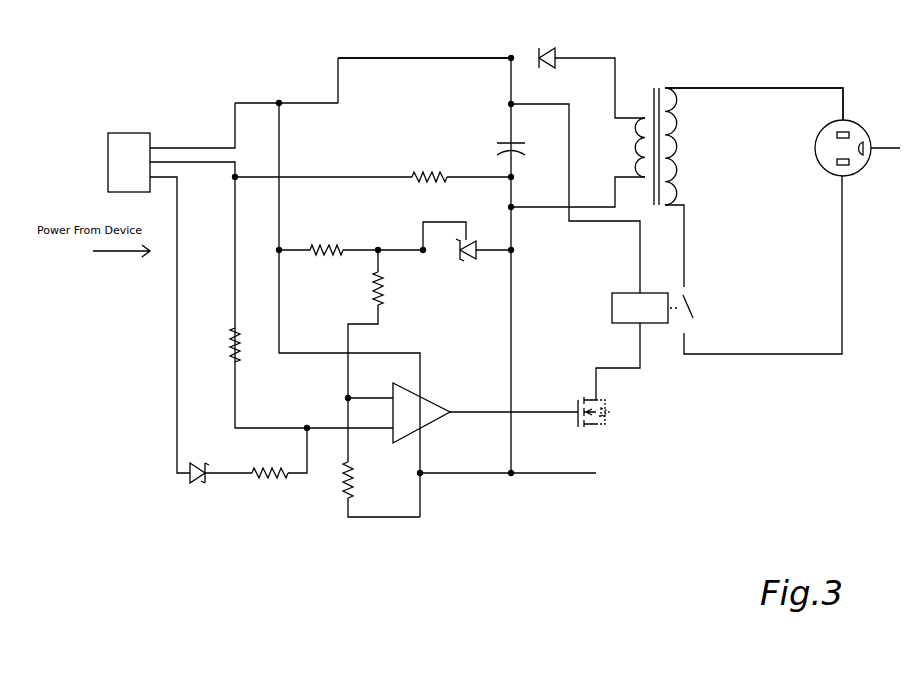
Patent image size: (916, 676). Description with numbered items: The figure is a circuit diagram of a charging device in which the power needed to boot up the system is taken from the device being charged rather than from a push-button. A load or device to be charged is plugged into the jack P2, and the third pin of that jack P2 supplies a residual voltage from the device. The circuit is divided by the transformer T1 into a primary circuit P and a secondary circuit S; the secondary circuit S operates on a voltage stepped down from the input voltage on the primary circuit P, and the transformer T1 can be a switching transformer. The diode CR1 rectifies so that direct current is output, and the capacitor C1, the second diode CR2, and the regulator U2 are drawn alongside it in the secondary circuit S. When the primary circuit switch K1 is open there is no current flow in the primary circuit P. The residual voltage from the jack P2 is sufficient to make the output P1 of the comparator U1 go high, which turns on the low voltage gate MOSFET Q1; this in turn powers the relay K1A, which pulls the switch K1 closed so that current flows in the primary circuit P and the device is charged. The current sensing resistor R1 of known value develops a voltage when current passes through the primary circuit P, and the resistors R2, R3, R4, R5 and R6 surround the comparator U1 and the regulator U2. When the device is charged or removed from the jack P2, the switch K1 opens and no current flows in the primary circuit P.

The secondary circuit S is at (367, 58).
The primary circuit P is at (745, 89).
The output pin of comparator P1 is at (851, 142).
The jack P2 is at (129, 155).
The current sensing resistor R1 is at (427, 176).
The resistor 1.5K R2 is at (324, 249).
The resistor 10.0K R3 is at (216, 343).
The resistor 1.8K R4 is at (395, 285).
The resistor 620 ohm R5 is at (363, 477).
The resistor 10.0K R6 is at (267, 473).
The capacitor C1 is at (518, 145).
The diode bridge CR1 is at (551, 50).
The Schottky diode DFLS140-7 CR2 is at (191, 472).
The transformer T1 is at (656, 137).
The comparator U1 is at (431, 400).
The shunt regulator TLV431 U2 is at (466, 267).
The relay K1A is at (640, 308).
The primary circuit switch K1 is at (692, 306).
The mosfet semiconductor Q1 is at (631, 410).